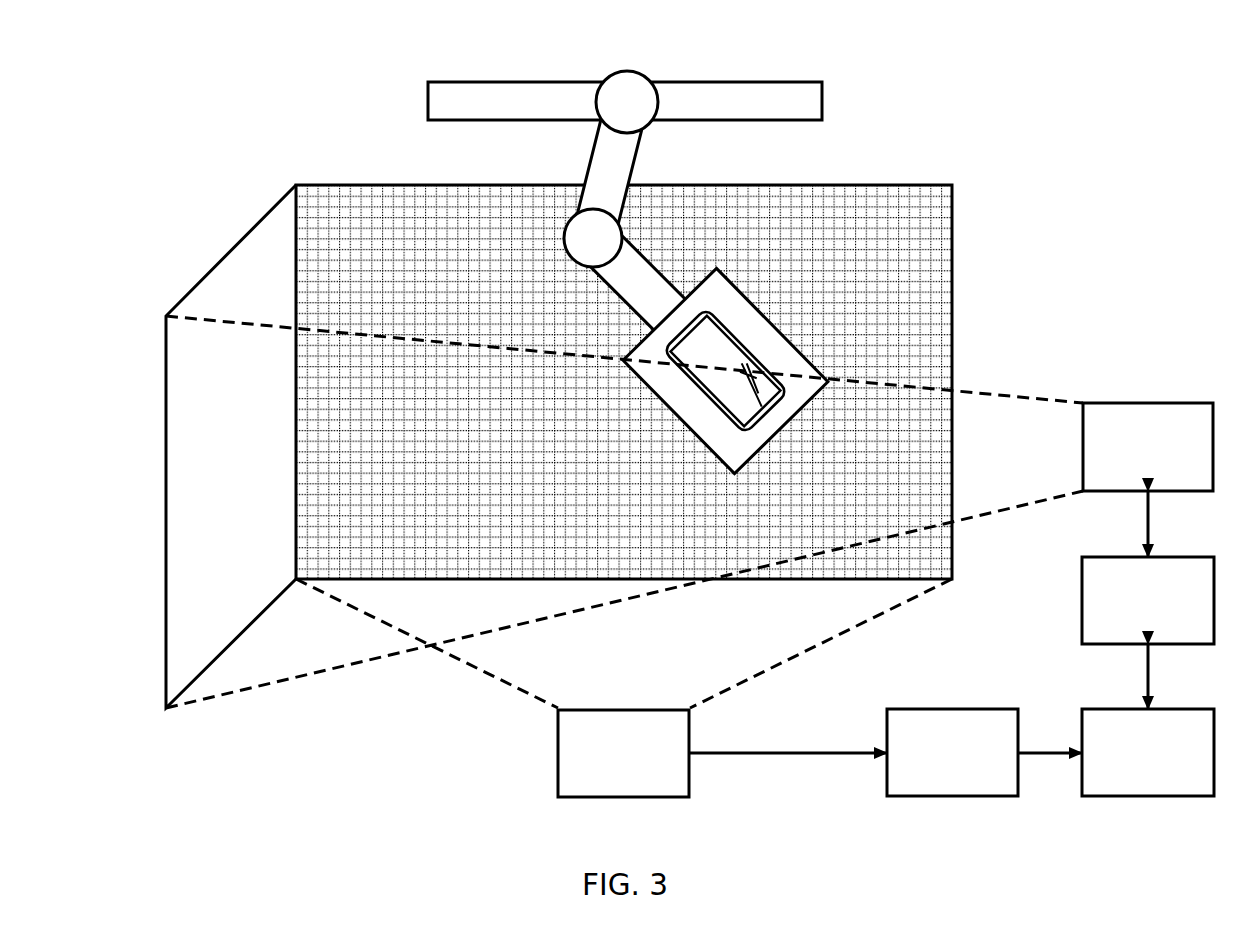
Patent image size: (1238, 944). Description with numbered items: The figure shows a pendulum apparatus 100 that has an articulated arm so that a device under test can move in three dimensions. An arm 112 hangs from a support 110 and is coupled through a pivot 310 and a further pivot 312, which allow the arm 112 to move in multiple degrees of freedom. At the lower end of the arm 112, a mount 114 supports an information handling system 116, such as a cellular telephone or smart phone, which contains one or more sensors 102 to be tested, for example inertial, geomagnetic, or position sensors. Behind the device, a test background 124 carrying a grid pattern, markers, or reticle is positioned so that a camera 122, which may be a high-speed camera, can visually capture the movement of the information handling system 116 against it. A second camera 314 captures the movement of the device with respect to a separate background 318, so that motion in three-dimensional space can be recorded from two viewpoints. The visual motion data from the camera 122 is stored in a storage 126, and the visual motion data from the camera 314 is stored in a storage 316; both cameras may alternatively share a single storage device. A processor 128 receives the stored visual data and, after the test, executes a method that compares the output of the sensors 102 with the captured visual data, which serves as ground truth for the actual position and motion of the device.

The pendulum apparatus 100 is at (1112, 111).
The sensors 102 is at (786, 412).
The support 110 is at (822, 90).
The arm 112 is at (586, 164).
The mount 114 is at (763, 312).
The information handling system 116 is at (764, 362).
The camera 122 is at (558, 775).
The test background 124 is at (953, 284).
The storage 126 is at (988, 709).
The processor 128 is at (1183, 709).
The pivot 310 is at (629, 72).
The pivot 312 is at (565, 240).
The camera 314 is at (1183, 403).
The storage 316 is at (1183, 557).
The background 318 is at (233, 251).